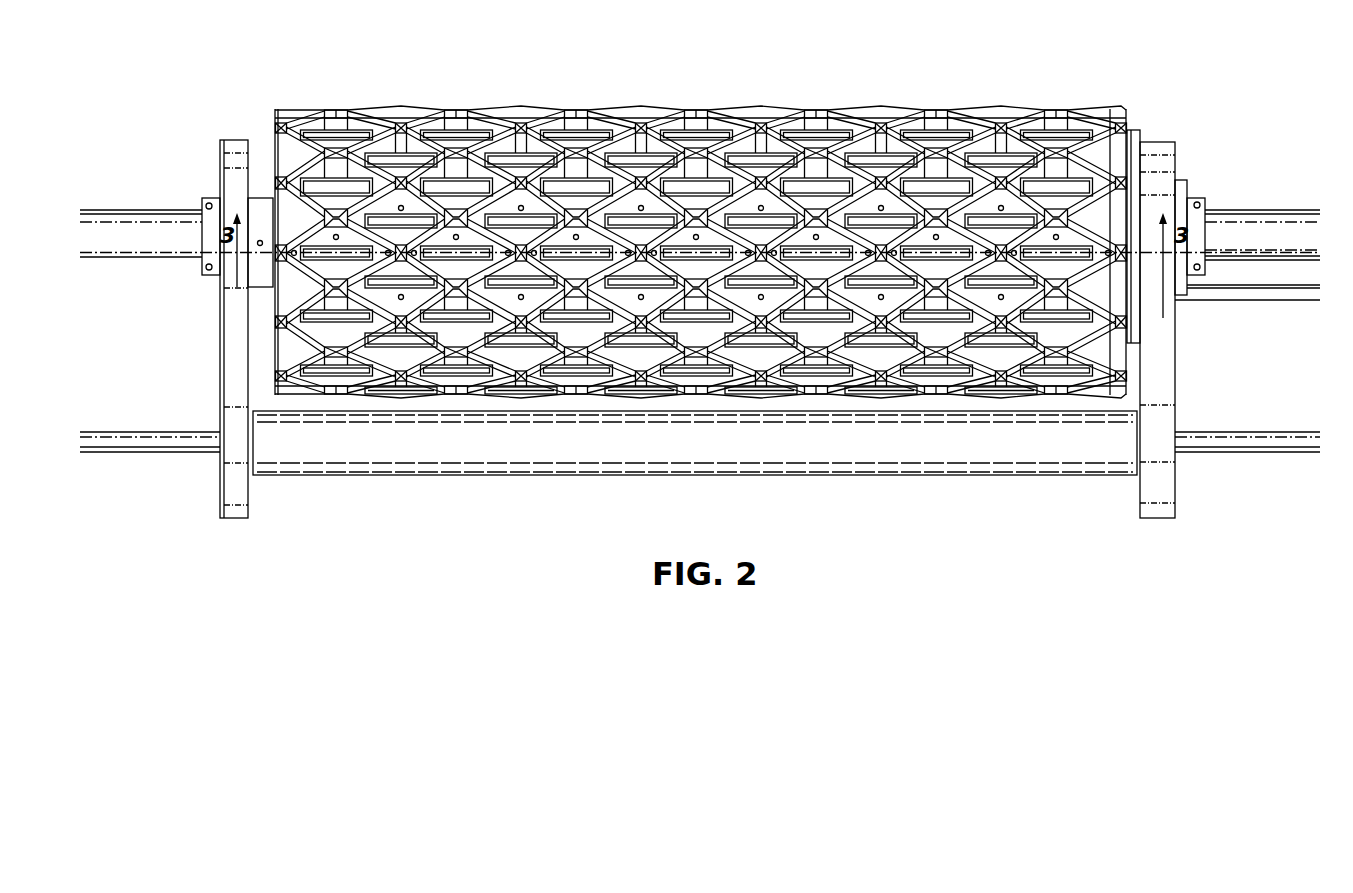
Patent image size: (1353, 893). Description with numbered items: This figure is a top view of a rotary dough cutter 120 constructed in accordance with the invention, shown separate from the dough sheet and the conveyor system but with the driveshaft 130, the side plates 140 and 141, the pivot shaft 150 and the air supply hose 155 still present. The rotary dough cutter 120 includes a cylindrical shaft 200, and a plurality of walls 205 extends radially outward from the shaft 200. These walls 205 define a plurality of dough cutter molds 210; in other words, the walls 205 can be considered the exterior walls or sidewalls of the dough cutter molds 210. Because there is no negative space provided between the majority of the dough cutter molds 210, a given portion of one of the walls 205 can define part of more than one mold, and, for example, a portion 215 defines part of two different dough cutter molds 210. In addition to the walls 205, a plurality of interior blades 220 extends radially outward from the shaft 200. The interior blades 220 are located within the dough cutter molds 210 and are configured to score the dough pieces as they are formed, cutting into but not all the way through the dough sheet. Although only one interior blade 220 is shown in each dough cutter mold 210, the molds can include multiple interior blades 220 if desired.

The rotary dough cutter 120 is at (730, 103).
The driveshaft 130 is at (138, 221).
The side plate 140 is at (1158, 345).
The side plate 141 is at (233, 386).
The pivot shaft 150 is at (157, 448).
The air supply hose 155 is at (1260, 290).
The cylindrical shaft 200 is at (280, 300).
The walls 205 is at (425, 150).
The dough cutter molds 210 is at (1010, 207).
The portion 215 is at (862, 268).
The interior blades 220 is at (758, 212).